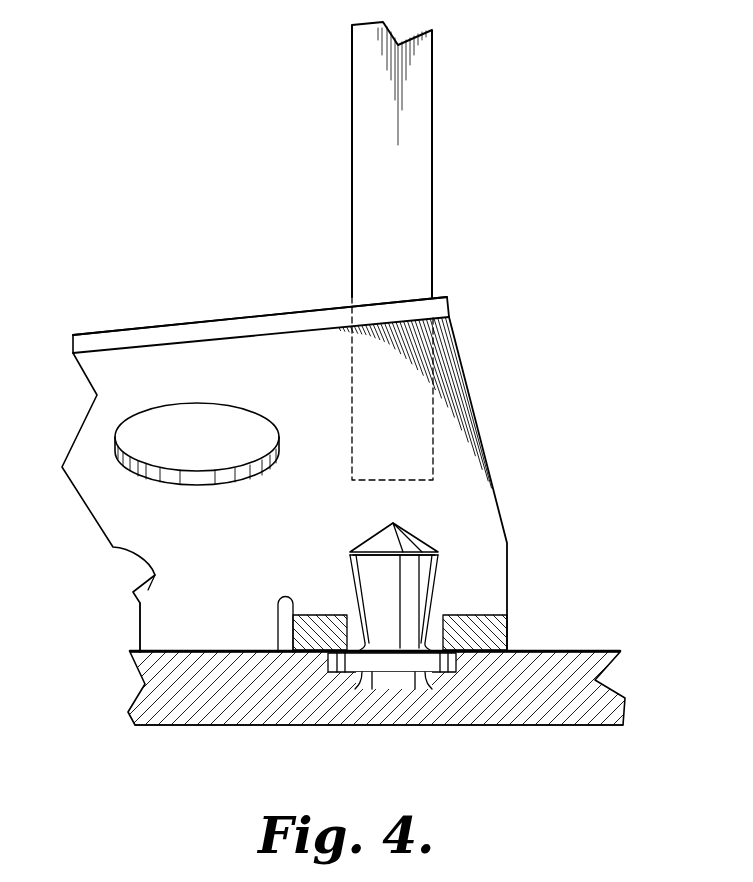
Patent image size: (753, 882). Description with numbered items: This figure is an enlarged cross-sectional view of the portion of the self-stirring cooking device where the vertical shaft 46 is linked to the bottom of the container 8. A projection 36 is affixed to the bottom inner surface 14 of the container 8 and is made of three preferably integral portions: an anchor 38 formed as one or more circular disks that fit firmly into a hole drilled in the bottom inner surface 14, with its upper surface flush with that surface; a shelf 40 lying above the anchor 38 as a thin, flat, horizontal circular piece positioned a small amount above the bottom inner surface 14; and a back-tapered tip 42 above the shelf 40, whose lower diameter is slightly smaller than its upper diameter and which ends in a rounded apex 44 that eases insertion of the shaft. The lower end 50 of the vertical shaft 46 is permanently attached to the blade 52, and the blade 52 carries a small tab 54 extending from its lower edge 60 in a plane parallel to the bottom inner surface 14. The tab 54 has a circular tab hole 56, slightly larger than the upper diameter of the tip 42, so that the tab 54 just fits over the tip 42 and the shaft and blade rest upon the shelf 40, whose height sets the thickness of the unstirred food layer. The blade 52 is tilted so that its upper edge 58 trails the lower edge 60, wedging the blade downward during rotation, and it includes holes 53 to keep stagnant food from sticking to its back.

The container 8 is at (594, 731).
The bottom inner surface 14 is at (588, 650).
The projection 36 is at (344, 598).
The anchor 38 is at (356, 684).
The shelf 40 is at (436, 672).
The back-tapered tip 42 is at (437, 580).
The rounded apex 44 is at (408, 528).
The vertical shaft 46 is at (350, 168).
The lower end of the vertical shaft 50 is at (433, 468).
The blade 52 is at (167, 323).
The holes 53 is at (165, 445).
The tab 54 is at (500, 631).
The tab hole 56 is at (438, 605).
The upper edge of the blade 58 is at (220, 328).
The lower edge of the blade 60 is at (132, 653).